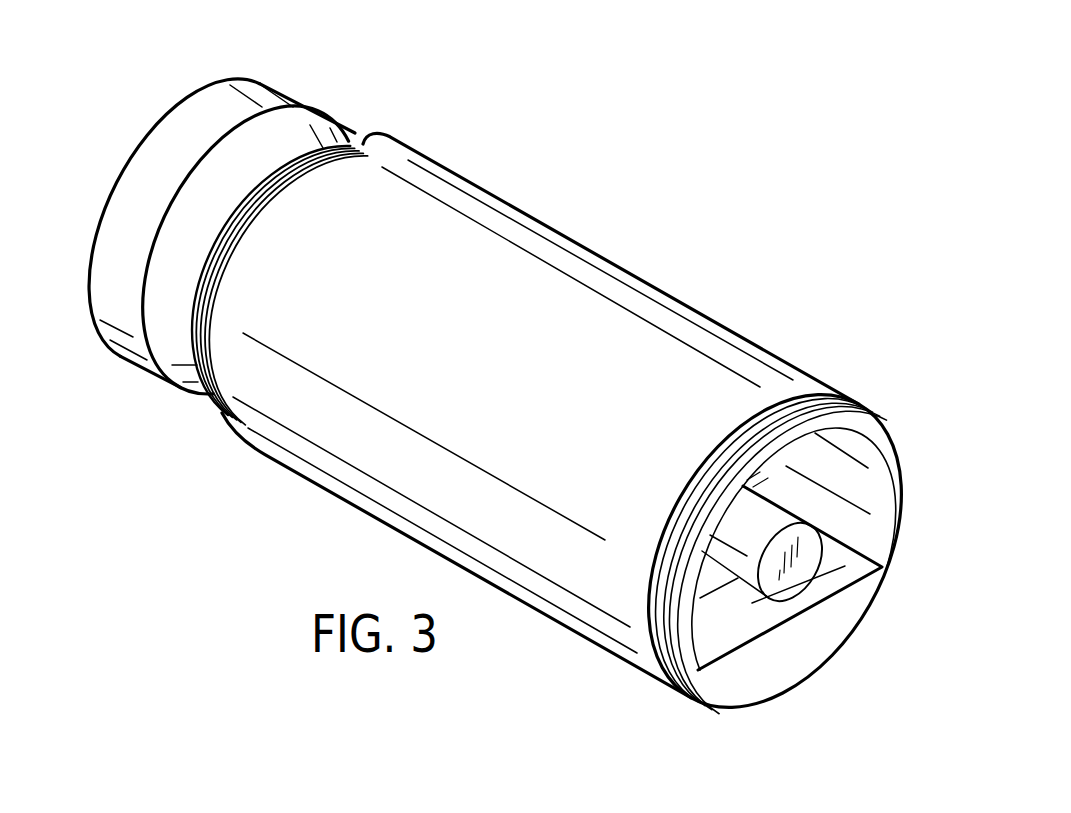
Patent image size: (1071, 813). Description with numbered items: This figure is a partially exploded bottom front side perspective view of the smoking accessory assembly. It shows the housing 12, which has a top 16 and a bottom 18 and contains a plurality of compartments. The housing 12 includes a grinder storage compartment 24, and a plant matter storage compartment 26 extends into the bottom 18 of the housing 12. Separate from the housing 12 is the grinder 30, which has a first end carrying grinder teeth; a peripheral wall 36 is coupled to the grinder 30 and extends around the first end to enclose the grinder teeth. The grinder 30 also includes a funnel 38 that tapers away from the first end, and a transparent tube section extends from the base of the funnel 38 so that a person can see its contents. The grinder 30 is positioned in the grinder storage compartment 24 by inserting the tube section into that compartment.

The housing 12 is at (630, 292).
The top 16 is at (362, 142).
The bottom 18 is at (889, 574).
The grinder storage compartment 24 is at (762, 528).
The plant matter storage compartment 26 is at (706, 608).
The grinder 30 is at (150, 100).
The peripheral wall 36 is at (210, 110).
The funnel 38 is at (174, 350).